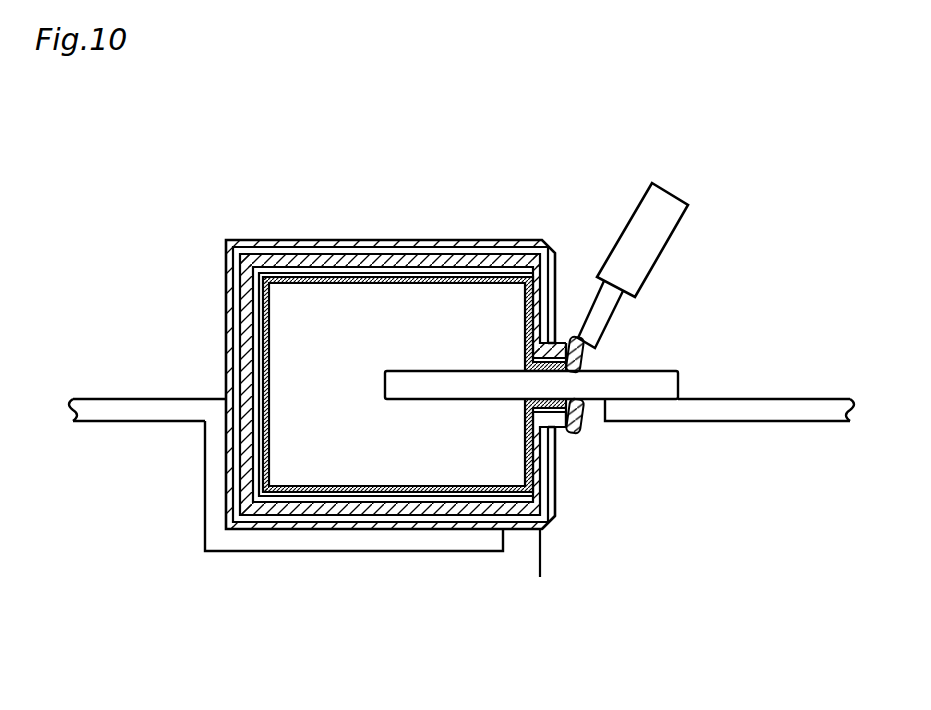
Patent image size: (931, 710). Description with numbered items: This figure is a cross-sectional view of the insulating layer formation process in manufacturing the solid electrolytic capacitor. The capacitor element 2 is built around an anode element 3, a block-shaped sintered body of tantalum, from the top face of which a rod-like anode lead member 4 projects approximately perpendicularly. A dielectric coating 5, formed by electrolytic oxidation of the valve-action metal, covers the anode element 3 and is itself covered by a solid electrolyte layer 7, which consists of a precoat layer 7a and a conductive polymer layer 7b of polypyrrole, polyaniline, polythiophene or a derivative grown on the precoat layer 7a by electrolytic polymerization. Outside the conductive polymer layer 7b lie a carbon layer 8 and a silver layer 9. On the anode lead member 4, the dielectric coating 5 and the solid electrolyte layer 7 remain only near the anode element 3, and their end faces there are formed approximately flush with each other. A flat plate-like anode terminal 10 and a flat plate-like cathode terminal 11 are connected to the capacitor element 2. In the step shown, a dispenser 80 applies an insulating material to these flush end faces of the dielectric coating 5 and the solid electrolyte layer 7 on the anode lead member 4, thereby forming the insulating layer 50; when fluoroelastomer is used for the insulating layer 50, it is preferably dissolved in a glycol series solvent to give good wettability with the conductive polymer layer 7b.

The capacitor element 2 is at (567, 253).
The anode element 3 is at (370, 302).
The anode lead member 4 is at (670, 371).
The dielectric coating 5 is at (345, 490).
The solid electrolyte layer 7 is at (457, 608).
The precoat layer 7a is at (397, 500).
The conductive polymer layer 7b is at (445, 510).
The carbon layer 8 is at (496, 528).
The silver layer 9 is at (543, 566).
The anode terminal 10 is at (812, 412).
The cathode terminal 11 is at (122, 413).
The insulating layer 50 is at (592, 358).
The dispenser 80 is at (667, 203).